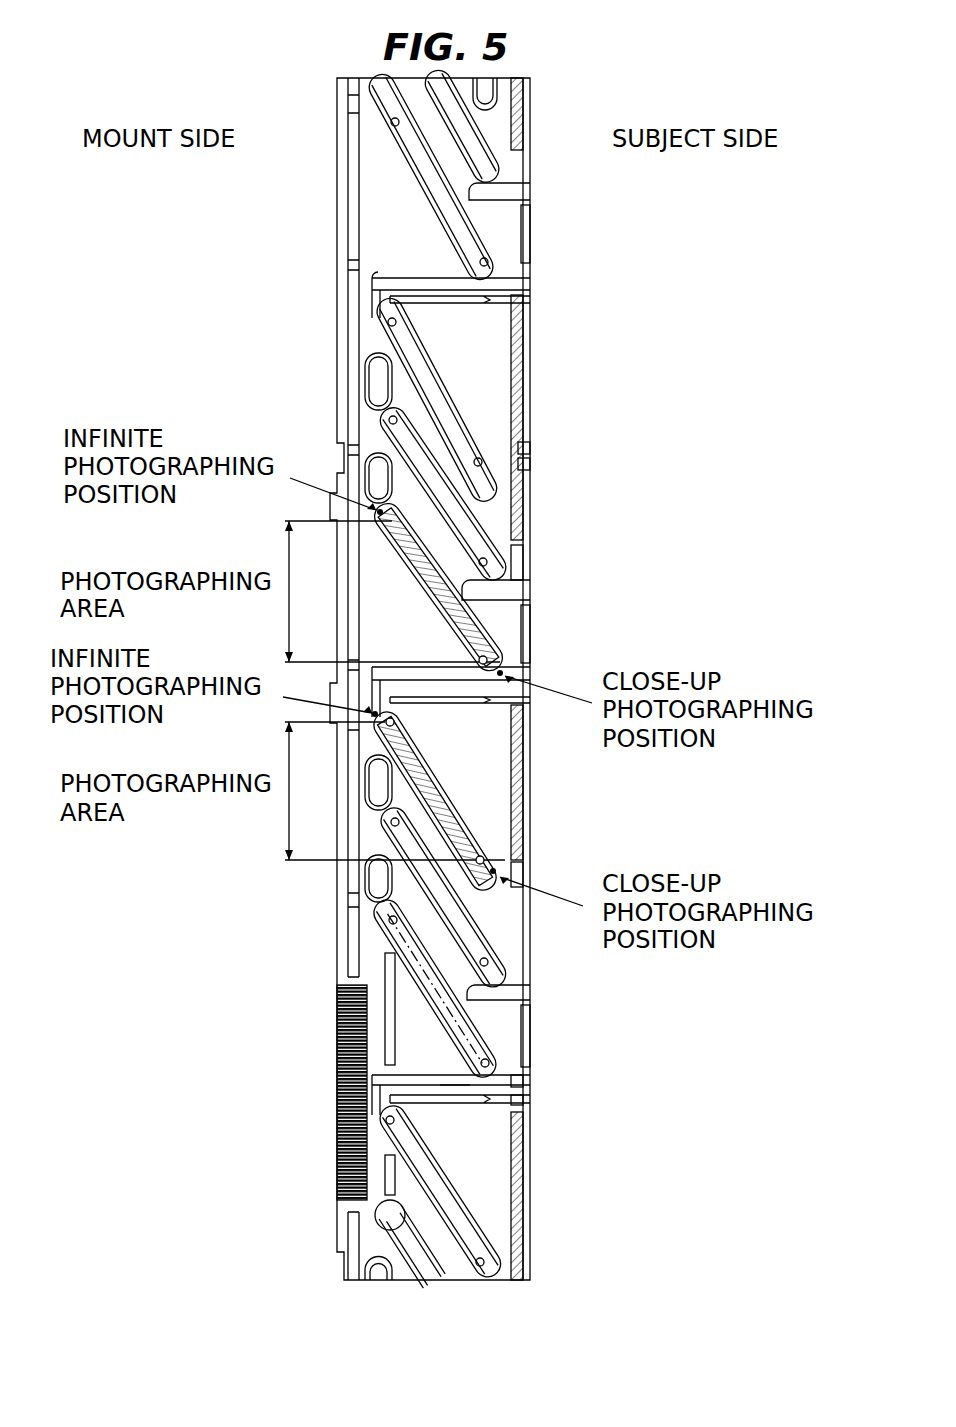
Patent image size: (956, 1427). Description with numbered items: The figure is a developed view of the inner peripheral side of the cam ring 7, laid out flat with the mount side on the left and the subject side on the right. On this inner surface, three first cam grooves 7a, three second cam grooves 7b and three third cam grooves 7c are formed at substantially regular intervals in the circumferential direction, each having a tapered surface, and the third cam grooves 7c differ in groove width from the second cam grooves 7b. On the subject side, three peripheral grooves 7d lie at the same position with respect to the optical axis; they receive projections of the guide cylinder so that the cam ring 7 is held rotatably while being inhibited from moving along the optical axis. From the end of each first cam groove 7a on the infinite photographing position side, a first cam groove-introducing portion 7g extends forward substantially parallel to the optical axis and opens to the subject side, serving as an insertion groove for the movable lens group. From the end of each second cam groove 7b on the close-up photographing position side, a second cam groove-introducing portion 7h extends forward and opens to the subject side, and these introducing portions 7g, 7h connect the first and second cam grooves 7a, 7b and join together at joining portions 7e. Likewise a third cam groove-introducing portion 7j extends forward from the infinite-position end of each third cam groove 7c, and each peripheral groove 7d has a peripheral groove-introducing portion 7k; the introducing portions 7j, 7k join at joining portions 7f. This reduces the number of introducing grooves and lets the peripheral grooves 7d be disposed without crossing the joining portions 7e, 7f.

The cam ring 7 is at (372, 213).
The first cam groove 7a is at (500, 850).
The second cam groove 7b is at (500, 645).
The third cam groove 7c is at (398, 445).
The peripheral groove 7d is at (518, 390).
The joining portion 7e is at (533, 1088).
The joining portion 7f is at (536, 548).
The first cam groove-introducing portion 7g is at (455, 1090).
The second cam groove-introducing portion 7h is at (513, 1090).
The third cam groove-introducing portion 7j is at (520, 595).
The peripheral groove-introducing portion 7k is at (520, 545).